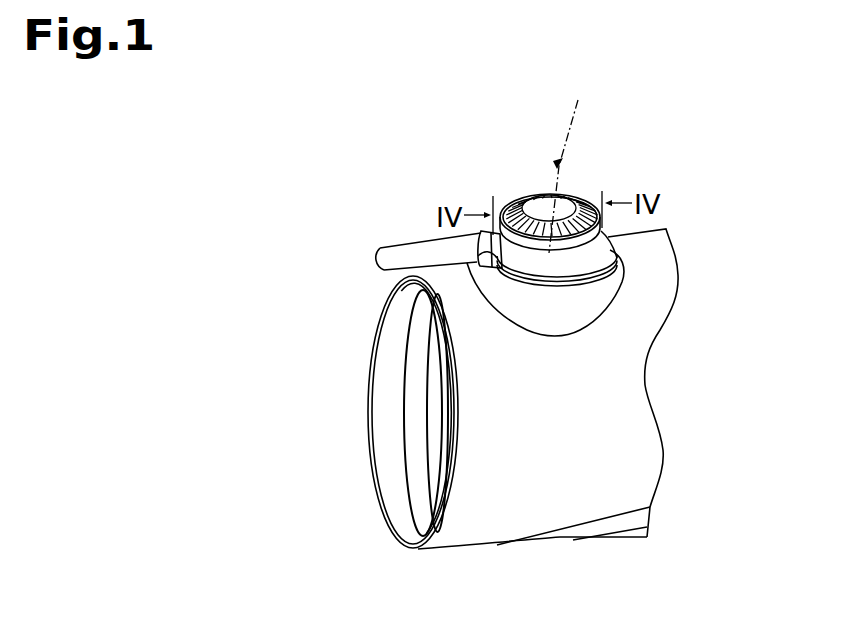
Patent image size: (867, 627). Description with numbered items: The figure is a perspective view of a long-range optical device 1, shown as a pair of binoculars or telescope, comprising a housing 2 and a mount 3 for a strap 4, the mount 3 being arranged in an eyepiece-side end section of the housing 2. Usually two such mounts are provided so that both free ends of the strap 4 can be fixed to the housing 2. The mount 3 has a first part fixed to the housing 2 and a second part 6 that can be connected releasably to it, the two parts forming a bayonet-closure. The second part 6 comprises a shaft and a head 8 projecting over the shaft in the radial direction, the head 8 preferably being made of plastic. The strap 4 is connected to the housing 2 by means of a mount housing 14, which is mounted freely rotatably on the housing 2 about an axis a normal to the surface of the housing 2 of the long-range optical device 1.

The long-range optical device 1 is at (414, 135).
The housing 2 is at (662, 264).
The mount 3 is at (493, 174).
The strap 4 is at (429, 253).
The second part 6 is at (572, 195).
The head 8 is at (549, 207).
The mount housing 14 is at (497, 228).
The axis a is at (570, 159).